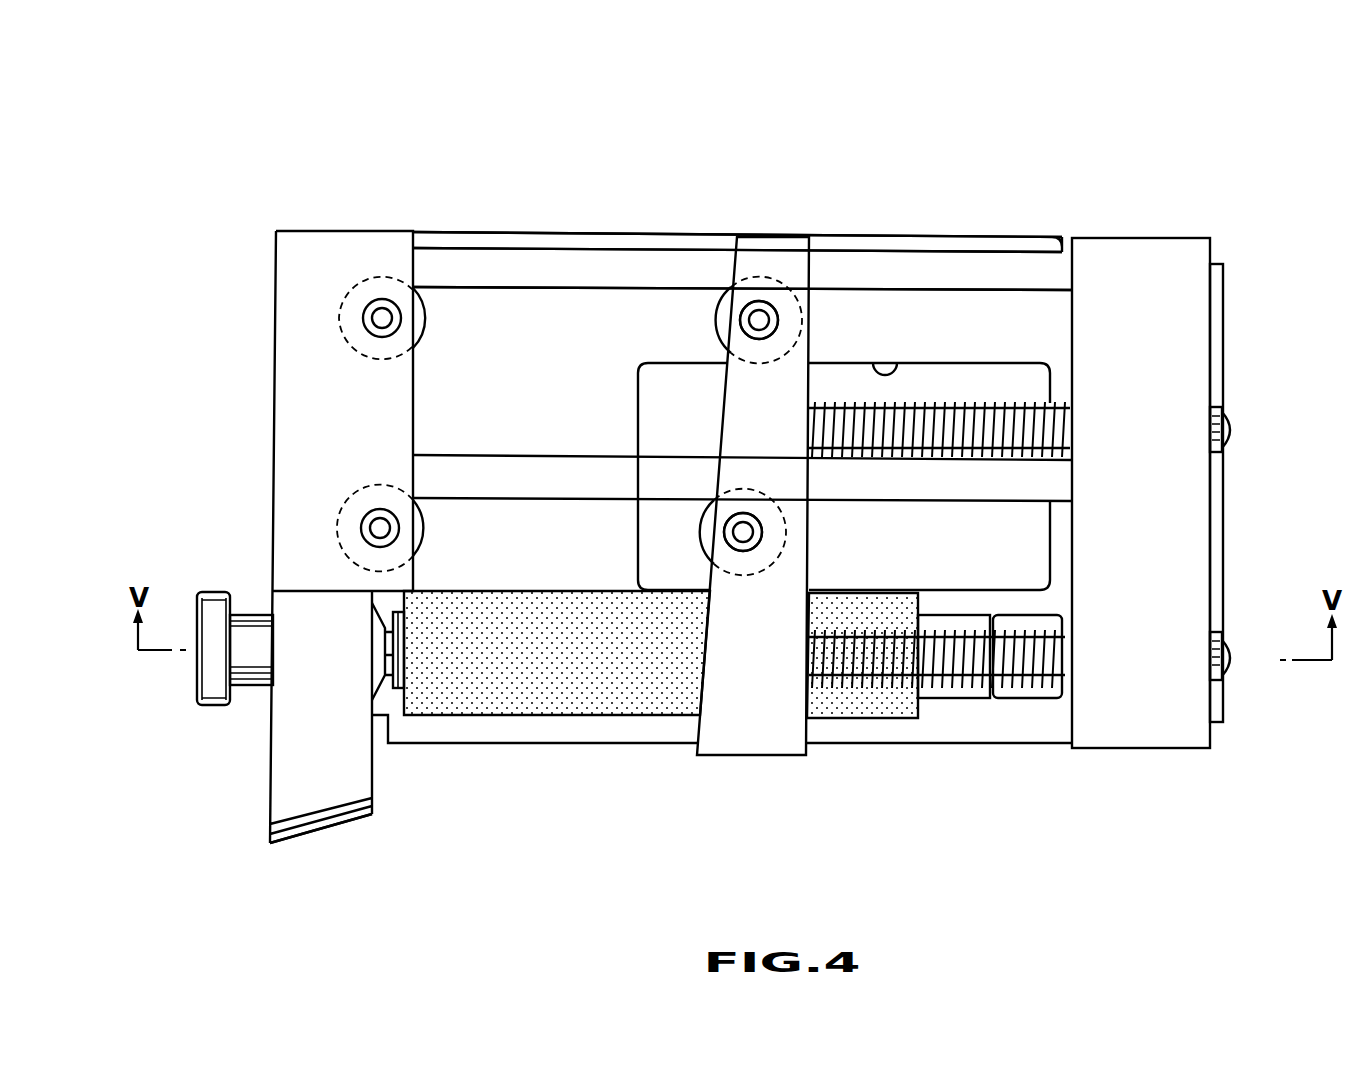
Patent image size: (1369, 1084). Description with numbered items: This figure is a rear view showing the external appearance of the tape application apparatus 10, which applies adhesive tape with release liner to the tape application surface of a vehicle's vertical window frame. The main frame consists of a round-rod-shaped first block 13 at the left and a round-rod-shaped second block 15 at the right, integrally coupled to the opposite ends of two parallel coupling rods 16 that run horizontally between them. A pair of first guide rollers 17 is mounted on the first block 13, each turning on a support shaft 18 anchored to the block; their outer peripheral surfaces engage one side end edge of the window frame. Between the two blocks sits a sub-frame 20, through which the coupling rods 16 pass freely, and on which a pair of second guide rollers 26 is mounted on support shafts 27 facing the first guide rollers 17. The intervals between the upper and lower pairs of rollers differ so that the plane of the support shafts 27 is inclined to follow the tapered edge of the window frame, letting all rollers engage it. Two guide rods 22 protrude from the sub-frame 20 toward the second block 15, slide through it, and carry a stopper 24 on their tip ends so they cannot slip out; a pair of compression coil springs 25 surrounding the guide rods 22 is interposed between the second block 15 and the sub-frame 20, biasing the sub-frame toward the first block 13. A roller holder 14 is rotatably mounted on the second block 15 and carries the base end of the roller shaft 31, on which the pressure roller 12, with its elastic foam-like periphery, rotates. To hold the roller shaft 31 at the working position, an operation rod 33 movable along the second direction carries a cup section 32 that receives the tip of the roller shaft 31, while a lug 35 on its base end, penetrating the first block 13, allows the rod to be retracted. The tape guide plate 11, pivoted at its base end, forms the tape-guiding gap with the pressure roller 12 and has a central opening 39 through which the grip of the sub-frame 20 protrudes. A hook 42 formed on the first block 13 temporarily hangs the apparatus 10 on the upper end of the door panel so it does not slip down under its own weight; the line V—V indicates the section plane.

The tape application apparatus 10 is at (868, 187).
The tape guide plate 11 is at (585, 300).
The pressure roller 12 is at (615, 678).
The first block 13 is at (290, 245).
The roller holder 14 is at (1028, 692).
The second block 15 is at (1125, 252).
The coupling rods 16 is at (938, 265).
The first guide rollers 17 is at (428, 320).
The support shafts 18 is at (382, 308).
The sub-frame 20 is at (744, 720).
The guide rods 22 is at (1236, 432).
The stopper 24 is at (1220, 406).
The compression coil springs 25 is at (1012, 408).
The second guide rollers 26 is at (718, 320).
The support shafts 27 is at (760, 310).
The roller shaft 31 is at (402, 655).
The cup section 32 is at (372, 658).
The operation rod 33 is at (256, 620).
The lug 35 is at (222, 700).
The opening 39 is at (896, 364).
The hook 42 is at (336, 822).